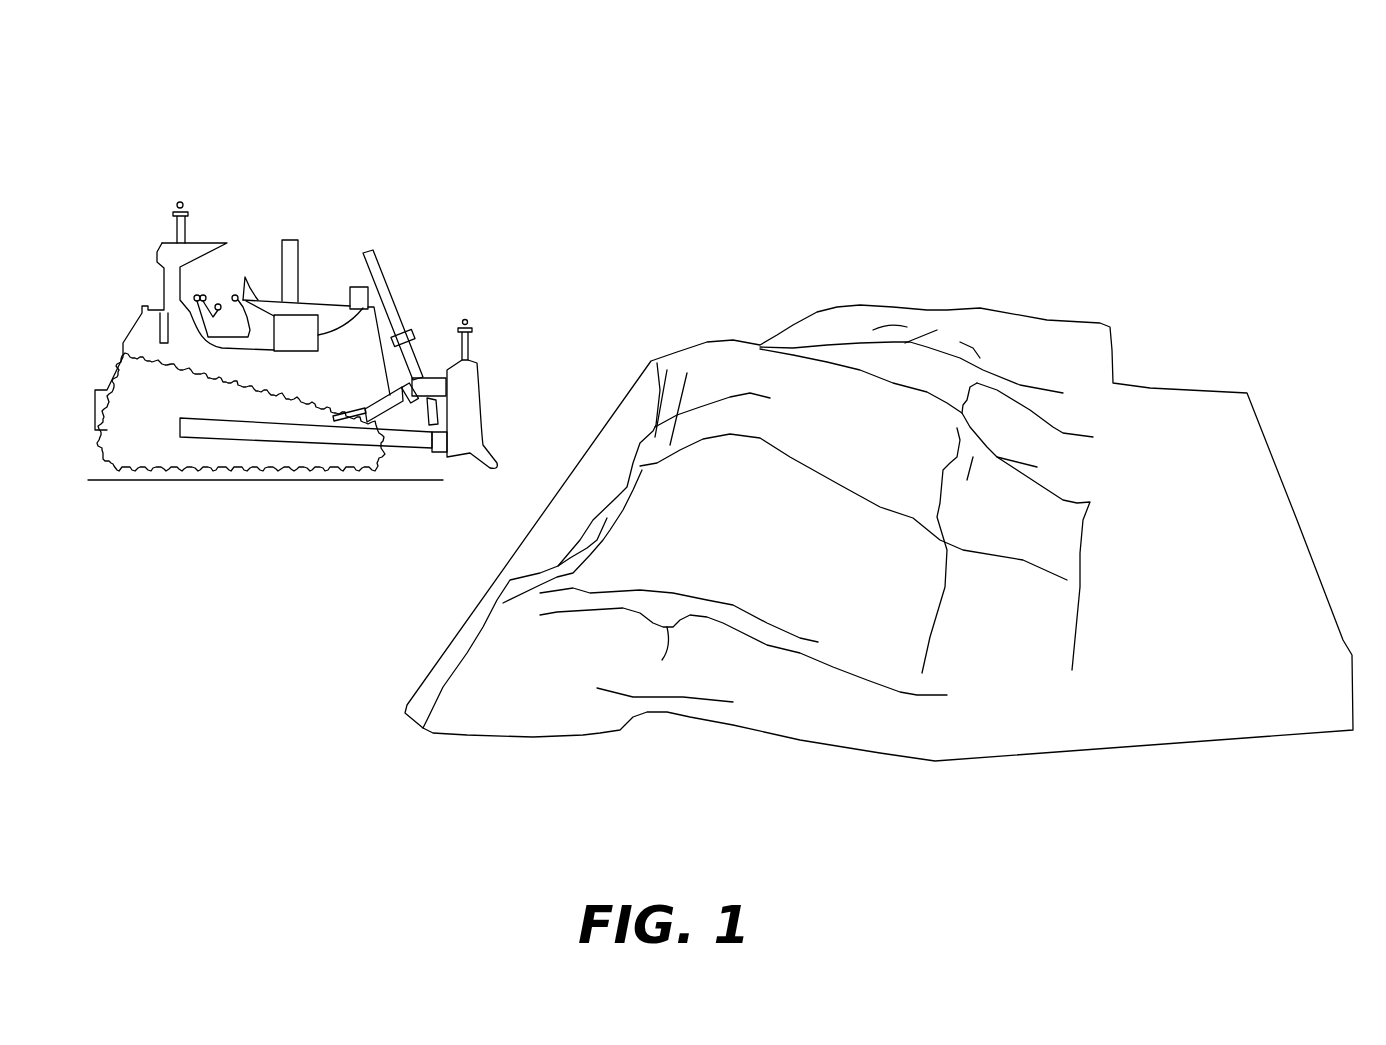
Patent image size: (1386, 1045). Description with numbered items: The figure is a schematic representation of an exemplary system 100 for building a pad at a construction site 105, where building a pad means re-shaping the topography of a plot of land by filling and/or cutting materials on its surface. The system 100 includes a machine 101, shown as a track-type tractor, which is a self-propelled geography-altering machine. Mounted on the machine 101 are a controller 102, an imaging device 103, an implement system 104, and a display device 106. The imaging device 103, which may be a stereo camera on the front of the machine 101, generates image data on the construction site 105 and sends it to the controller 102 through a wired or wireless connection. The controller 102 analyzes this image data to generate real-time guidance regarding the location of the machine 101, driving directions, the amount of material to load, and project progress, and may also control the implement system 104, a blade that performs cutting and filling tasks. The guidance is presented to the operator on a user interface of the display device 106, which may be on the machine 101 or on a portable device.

The system 100 is at (182, 88).
The machine 101 is at (133, 338).
The controller 102 is at (311, 347).
The imaging device 103 is at (358, 287).
The implement system 104 is at (466, 445).
The construction site 105 is at (665, 363).
The display device 106 is at (248, 299).